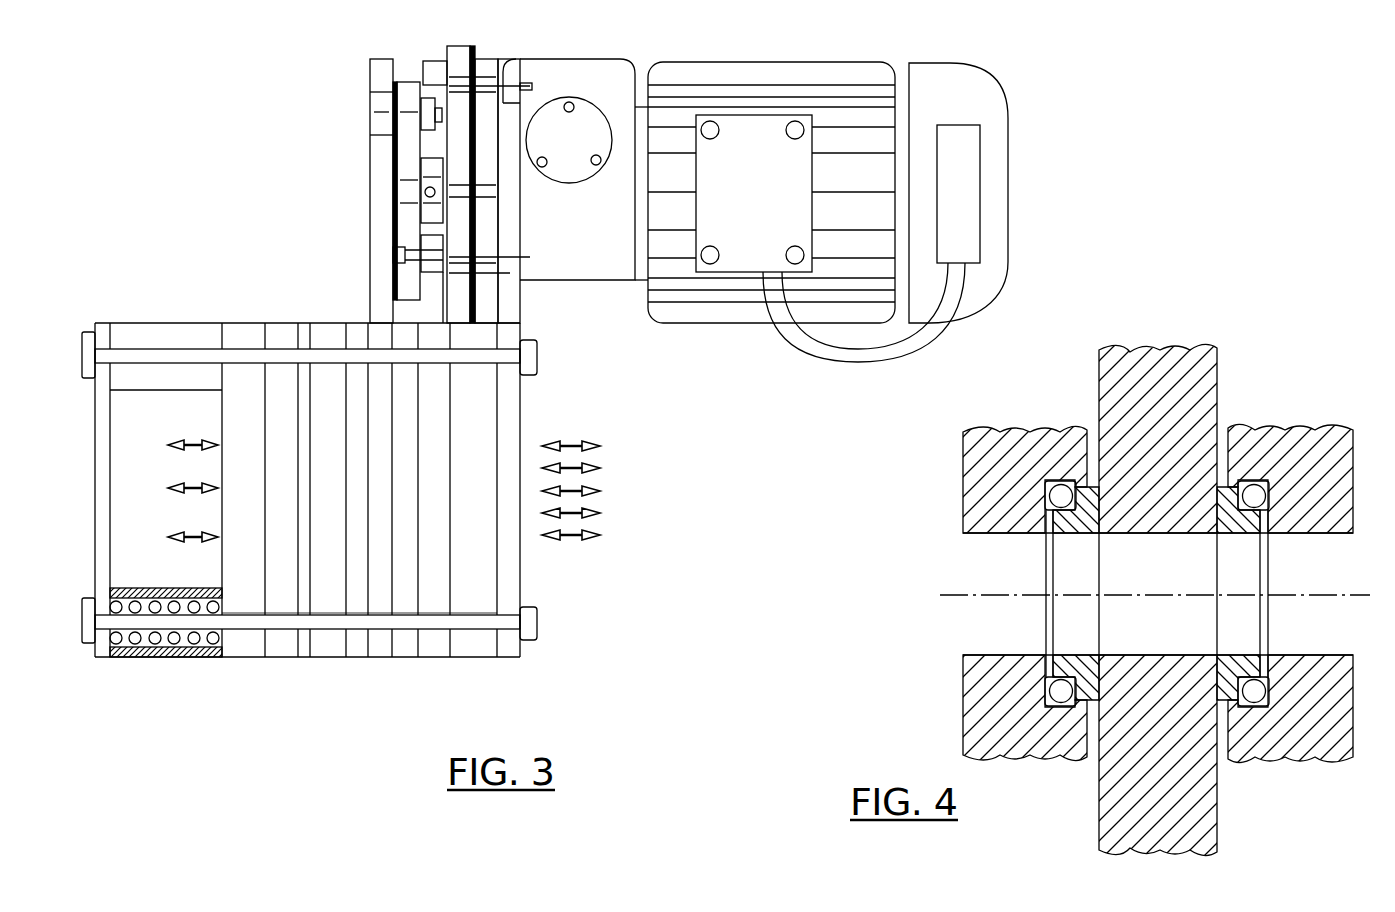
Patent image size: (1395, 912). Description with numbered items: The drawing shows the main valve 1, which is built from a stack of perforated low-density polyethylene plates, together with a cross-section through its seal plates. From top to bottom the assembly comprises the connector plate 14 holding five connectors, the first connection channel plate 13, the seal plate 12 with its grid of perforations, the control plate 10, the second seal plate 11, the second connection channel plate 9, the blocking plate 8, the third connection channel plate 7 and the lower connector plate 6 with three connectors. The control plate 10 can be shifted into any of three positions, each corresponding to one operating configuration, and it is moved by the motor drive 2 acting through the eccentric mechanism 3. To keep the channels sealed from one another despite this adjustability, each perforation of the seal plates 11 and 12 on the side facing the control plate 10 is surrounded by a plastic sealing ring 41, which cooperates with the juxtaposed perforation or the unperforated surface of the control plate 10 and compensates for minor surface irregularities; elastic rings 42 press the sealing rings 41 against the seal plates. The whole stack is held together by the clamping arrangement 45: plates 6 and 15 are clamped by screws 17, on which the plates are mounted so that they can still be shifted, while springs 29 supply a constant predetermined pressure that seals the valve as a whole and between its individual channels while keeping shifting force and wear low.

In FIG. 3, the main valve 1 is at (302, 316).
In FIG. 3, the motor drive 2 is at (690, 46).
In FIG. 3, the eccentric mechanism 3 is at (408, 72).
In FIG. 3, the lower connector plate 6 is at (234, 506).
In FIG. 3, the third connection channel plate 7 is at (274, 506).
In FIG. 3, the blocking plate 8 is at (301, 506).
In FIG. 3, the second connection channel plate 9 is at (320, 506).
In FIG. 3, the control plate 10 is at (382, 506).
In FIG. 4, the control plate 10 is at (1133, 830).
In FIG. 3, the second seal plate 11 is at (356, 506).
In FIG. 3, the seal plate 12 is at (406, 506).
In FIG. 3, the first connection channel plate 13 is at (433, 506).
In FIG. 3, the connector plate 14 is at (469, 506).
In FIG. 3, the plate 15 is at (510, 506).
In FIG. 3, the screws 17 is at (240, 613).
In FIG. 3, the springs 29 is at (124, 658).
In FIG. 3, the clamping arrangement 45 is at (180, 664).
In FIG. 4, the sealing ring 41 is at (1237, 535).
In FIG. 4, the elastic rings 42 is at (1256, 490).